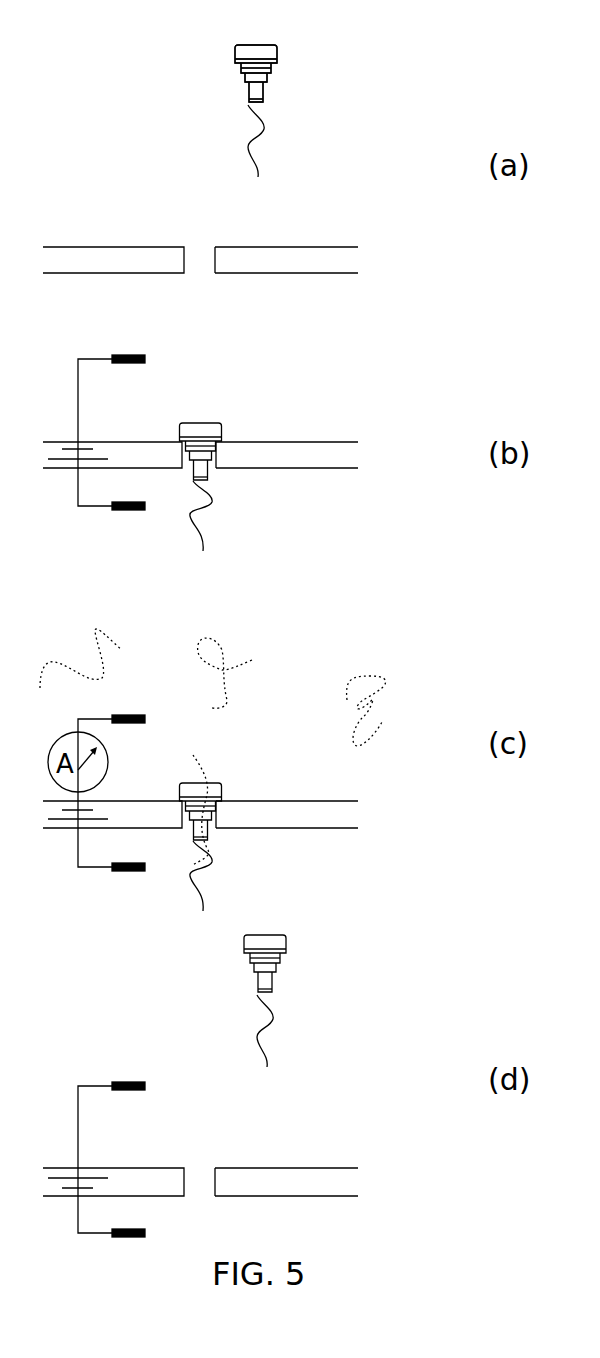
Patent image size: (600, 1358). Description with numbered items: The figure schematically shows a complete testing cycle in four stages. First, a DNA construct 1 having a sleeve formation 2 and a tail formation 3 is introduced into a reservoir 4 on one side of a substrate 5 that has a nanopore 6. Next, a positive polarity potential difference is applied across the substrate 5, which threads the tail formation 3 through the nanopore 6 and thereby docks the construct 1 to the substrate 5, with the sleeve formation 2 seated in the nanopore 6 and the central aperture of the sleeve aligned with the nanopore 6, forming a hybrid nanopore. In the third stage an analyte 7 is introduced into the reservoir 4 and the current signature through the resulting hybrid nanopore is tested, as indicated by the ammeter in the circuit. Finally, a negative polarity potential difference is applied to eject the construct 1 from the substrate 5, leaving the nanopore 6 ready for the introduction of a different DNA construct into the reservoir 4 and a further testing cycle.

The DNA construct 1 is at (204, 44).
The sleeve formation 2 is at (277, 53).
The tail formation 3 is at (258, 153).
The reservoir 4 is at (402, 157).
The substrate 5 is at (84, 255).
The nanopore 6 is at (196, 265).
The analyte 7 is at (256, 642).